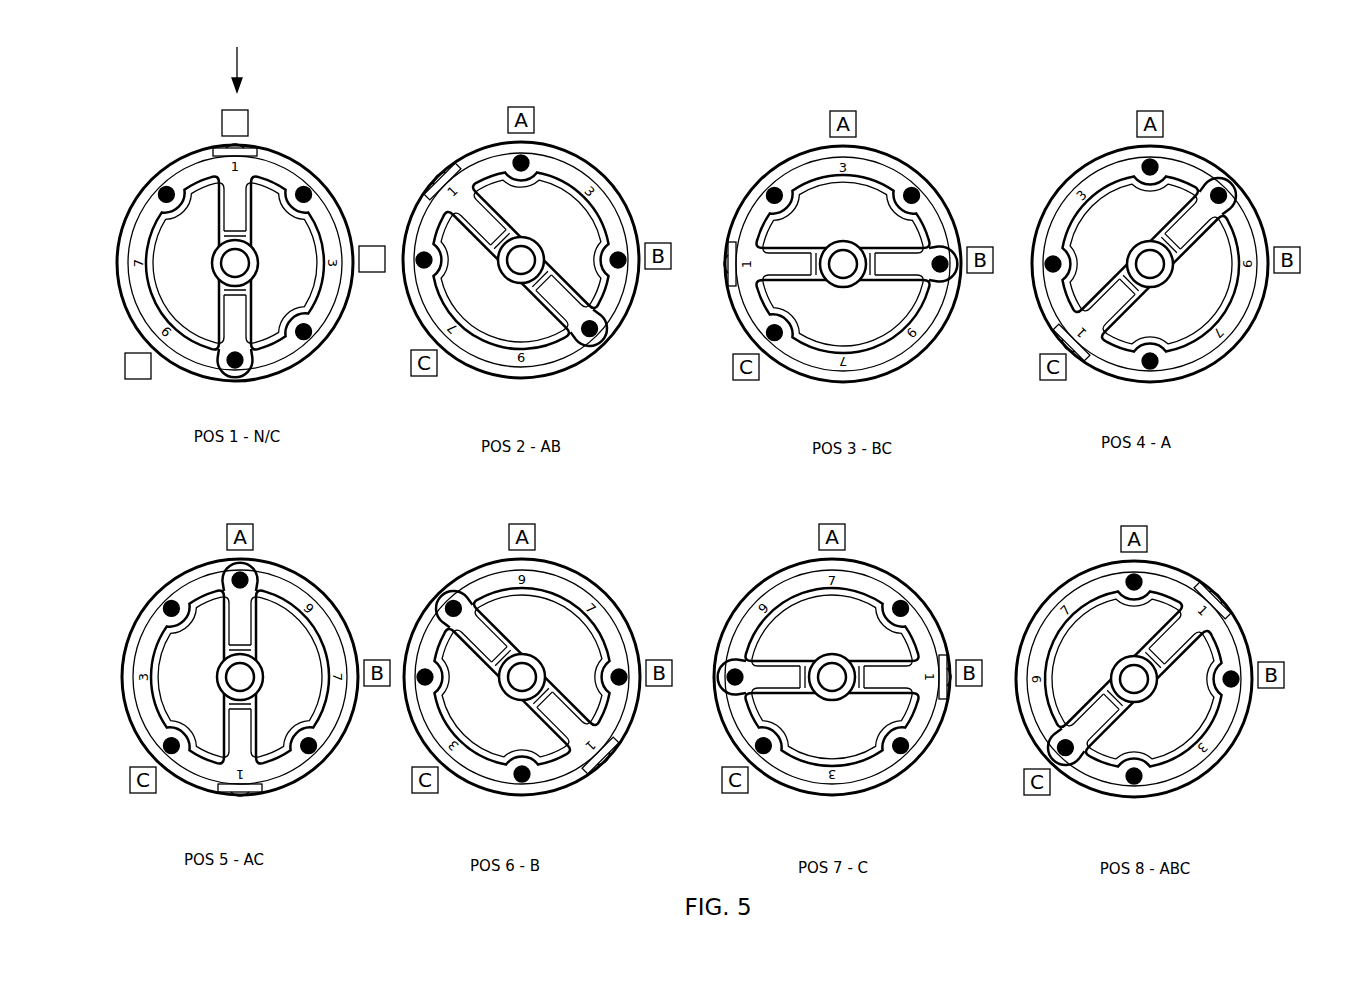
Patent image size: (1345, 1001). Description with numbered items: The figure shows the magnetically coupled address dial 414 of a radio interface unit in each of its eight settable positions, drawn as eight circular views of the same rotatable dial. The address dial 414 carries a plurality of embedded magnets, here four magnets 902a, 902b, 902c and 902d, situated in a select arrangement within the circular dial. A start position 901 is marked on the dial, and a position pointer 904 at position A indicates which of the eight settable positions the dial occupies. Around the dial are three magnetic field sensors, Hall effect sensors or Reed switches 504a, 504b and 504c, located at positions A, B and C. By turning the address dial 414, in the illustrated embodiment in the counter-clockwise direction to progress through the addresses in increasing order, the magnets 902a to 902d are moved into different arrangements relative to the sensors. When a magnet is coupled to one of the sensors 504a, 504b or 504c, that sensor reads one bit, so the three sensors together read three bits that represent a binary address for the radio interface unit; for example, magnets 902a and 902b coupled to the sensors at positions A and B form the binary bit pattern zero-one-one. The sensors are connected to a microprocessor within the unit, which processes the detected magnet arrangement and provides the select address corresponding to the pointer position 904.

The address dial 414 is at (1343, 80).
The start position 901 is at (218, 147).
The magnet 902a is at (307, 188).
The magnet 902b is at (308, 350).
The magnet 902c is at (239, 370).
The magnet 902d is at (158, 188).
The Hall effect sensor or Reed switch 504a is at (251, 116).
The Hall effect sensor or Reed switch 504b is at (368, 273).
The Hall effect sensor or Reed switch 504c is at (137, 380).
The position pointer 904 is at (237, 57).